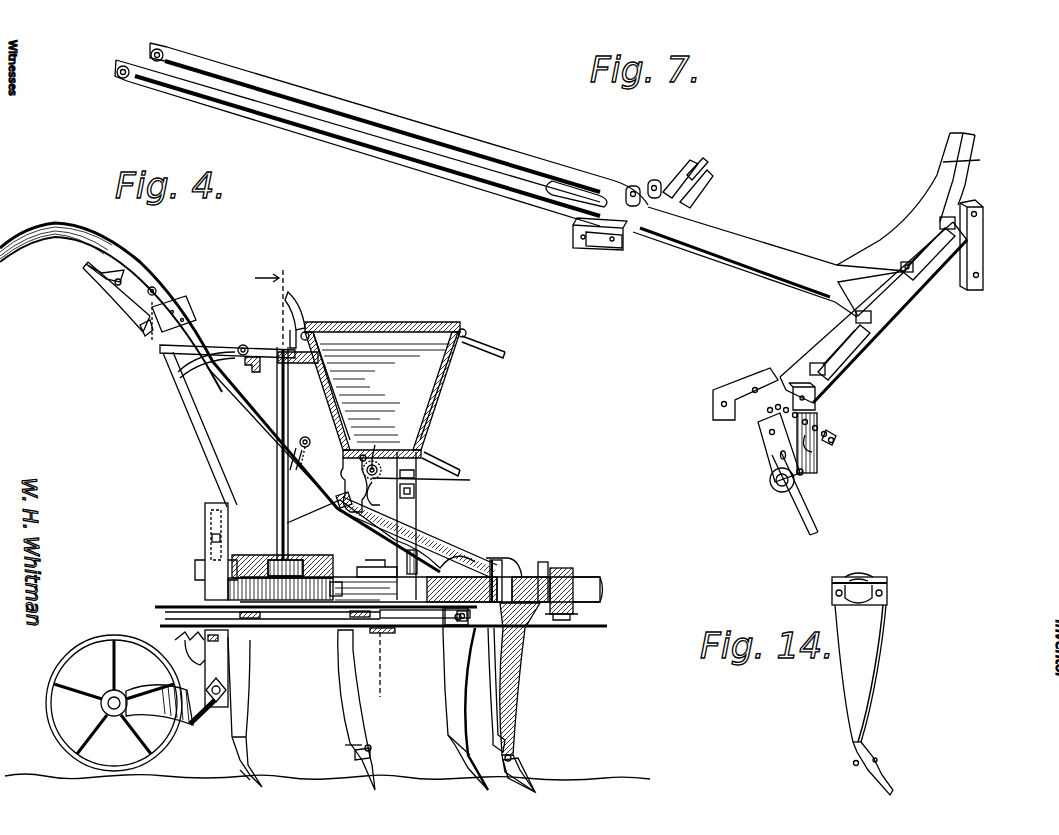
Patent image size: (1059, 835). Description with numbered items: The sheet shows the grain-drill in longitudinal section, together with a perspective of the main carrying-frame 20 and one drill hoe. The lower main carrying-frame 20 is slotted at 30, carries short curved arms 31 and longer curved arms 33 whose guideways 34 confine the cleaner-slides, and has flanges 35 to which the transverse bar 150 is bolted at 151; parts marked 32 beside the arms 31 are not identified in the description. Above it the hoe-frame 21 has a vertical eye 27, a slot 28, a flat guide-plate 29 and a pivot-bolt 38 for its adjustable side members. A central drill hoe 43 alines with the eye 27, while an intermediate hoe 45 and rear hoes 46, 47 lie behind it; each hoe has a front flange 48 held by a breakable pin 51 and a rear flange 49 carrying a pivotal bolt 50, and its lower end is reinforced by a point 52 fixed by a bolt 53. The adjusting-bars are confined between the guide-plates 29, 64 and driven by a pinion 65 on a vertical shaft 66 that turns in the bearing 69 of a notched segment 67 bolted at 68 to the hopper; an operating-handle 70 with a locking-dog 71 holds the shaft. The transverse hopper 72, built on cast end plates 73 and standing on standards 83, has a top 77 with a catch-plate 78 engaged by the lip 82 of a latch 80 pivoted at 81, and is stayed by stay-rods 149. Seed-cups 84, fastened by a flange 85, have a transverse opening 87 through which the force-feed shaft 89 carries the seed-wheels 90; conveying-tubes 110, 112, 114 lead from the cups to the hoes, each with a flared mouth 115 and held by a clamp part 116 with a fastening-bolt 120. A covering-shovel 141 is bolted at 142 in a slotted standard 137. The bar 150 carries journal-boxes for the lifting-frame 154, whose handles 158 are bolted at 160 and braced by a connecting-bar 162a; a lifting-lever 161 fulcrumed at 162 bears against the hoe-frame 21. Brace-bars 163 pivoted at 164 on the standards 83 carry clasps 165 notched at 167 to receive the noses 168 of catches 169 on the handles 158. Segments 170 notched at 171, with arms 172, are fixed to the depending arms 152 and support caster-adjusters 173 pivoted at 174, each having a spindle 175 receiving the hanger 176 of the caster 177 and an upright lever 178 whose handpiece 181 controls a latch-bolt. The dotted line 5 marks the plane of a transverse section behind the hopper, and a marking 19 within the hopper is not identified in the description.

In FIG. 4, the section line 5 is at (321, 484).
In FIG. 4, the seed 19 is at (385, 393).
In FIG. 7, the main carrying-frame 20 is at (769, 262).
In FIG. 4, the main carrying-frame 20 is at (405, 640).
In FIG. 4, the hoe-frame 21 is at (604, 590).
In FIG. 4, the vertical eye 27 is at (600, 582).
In FIG. 4, the slot 28 is at (366, 563).
In FIG. 4, the guide-plate 29 is at (232, 565).
In FIG. 7, the slot 30 is at (152, 56).
In FIG. 7, the short curved arms 31 is at (688, 162).
In FIG. 7, the clip plates 32 is at (708, 166).
In FIG. 4, the clip plates 32 is at (425, 630).
In FIG. 7, the long curved arms 33 is at (823, 338).
In FIG. 7, the guideways 34 is at (968, 148).
In FIG. 7, the projecting flanges 35 is at (946, 230).
In FIG. 4, the pivot-bolt 38 is at (572, 570).
In FIG. 4, the central drill-hoe 43 is at (518, 680).
In FIG. 4, the intermediate drill-hoe 45 is at (446, 670).
In FIG. 14, the rear drill-hoe 46 is at (885, 678).
In FIG. 4, the rear drill-hoe 47 is at (244, 720).
In FIG. 14, the front flange 48 is at (887, 586).
In FIG. 14, the rear flange 49 is at (843, 582).
In FIG. 4, the pivotal bolt 50 is at (495, 560).
In FIG. 4, the breakable pin 51 is at (543, 562).
In FIG. 4, the metallic point 52 is at (530, 775).
In FIG. 14, the metallic point 52 is at (881, 768).
In FIG. 4, the bolt 53 is at (513, 755).
In FIG. 4, the guide-plate 64 is at (262, 560).
In FIG. 4, the adjusting gear-pinion 65 is at (310, 555).
In FIG. 4, the vertical shaft 66 is at (277, 447).
In FIG. 4, the segment 67 is at (260, 370).
In FIG. 4, the bolt 68 is at (312, 364).
In FIG. 4, the central bearing 69 is at (265, 350).
In FIG. 4, the operating-handle 70 is at (165, 353).
In FIG. 4, the locking-dog 71 is at (210, 365).
In FIG. 4, the hopper 72 is at (385, 332).
In FIG. 4, the end plates 73 is at (440, 388).
In FIG. 4, the hopper top 77 is at (378, 322).
In FIG. 4, the catch-plate 78 is at (318, 325).
In FIG. 4, the latch 80 is at (306, 310).
In FIG. 4, the latch pivot 81 is at (378, 464).
In FIG. 4, the lip 82 is at (320, 320).
In FIG. 4, the standards 83 is at (418, 494).
In FIG. 4, the seed-cups 84 is at (426, 479).
In FIG. 4, the flange 85 is at (375, 445).
In FIG. 4, the transverse opening 87 is at (380, 470).
In FIG. 4, the force-feed shaft 89 is at (376, 483).
In FIG. 4, the force-feed seed-wheels 90 is at (344, 470).
In FIG. 4, the conveying-tube 110 is at (417, 537).
In FIG. 4, the conveying-tube 112 is at (460, 550).
In FIG. 4, the conveying-tube 114 is at (341, 520).
In FIG. 4, the flared mouth 115 is at (336, 498).
In FIG. 4, the clamp part 116 is at (510, 562).
In FIG. 4, the fastening-bolt 120 is at (485, 690).
In FIG. 4, the shovel-standard 137 is at (345, 672).
In FIG. 4, the adjustable shovel 141 is at (375, 718).
In FIG. 4, the bolt 142 is at (370, 752).
In FIG. 4, the stay-rods 149 is at (505, 355).
In FIG. 7, the transverse bar 150 is at (892, 318).
In FIG. 4, the transverse bar 150 is at (205, 610).
In FIG. 7, the bolts 151 is at (903, 262).
In FIG. 7, the depending arms 152 is at (984, 248).
In FIG. 4, the depending arms 152 is at (228, 677).
In FIG. 4, the lifting-frame 154 is at (292, 621).
In FIG. 4, the operating-handles 158 is at (185, 395).
In FIG. 4, the bolts 160 is at (205, 530).
In FIG. 4, the lifting-lever 161 is at (320, 628).
In FIG. 4, the fulcrum 162 is at (440, 640).
In FIG. 4, the connecting-bar 162a is at (160, 290).
In FIG. 4, the brace-bars 163 is at (250, 400).
In FIG. 4, the pivots 164 is at (417, 552).
In FIG. 4, the clasps 165 is at (180, 306).
In FIG. 4, the notches 167 is at (142, 330).
In FIG. 4, the noses 168 is at (152, 332).
In FIG. 4, the spring-pressed catches 169 is at (143, 330).
In FIG. 7, the segments 170 is at (820, 452).
In FIG. 4, the segments 170 is at (195, 660).
In FIG. 7, the notches 171 is at (836, 438).
In FIG. 4, the notches 171 is at (174, 637).
In FIG. 7, the depending arms 172 is at (805, 475).
In FIG. 7, the caster-adjuster 173 is at (768, 455).
In FIG. 7, the pivot 174 is at (779, 492).
In FIG. 4, the pivot 174 is at (228, 693).
In FIG. 7, the spindle 175 is at (812, 512).
In FIG. 4, the spindle 175 is at (188, 728).
In FIG. 4, the hanger 176 is at (150, 710).
In FIG. 4, the caster 177 is at (114, 698).
In FIG. 4, the upright lever 178 is at (280, 490).
In FIG. 4, the handpiece 181 is at (305, 440).